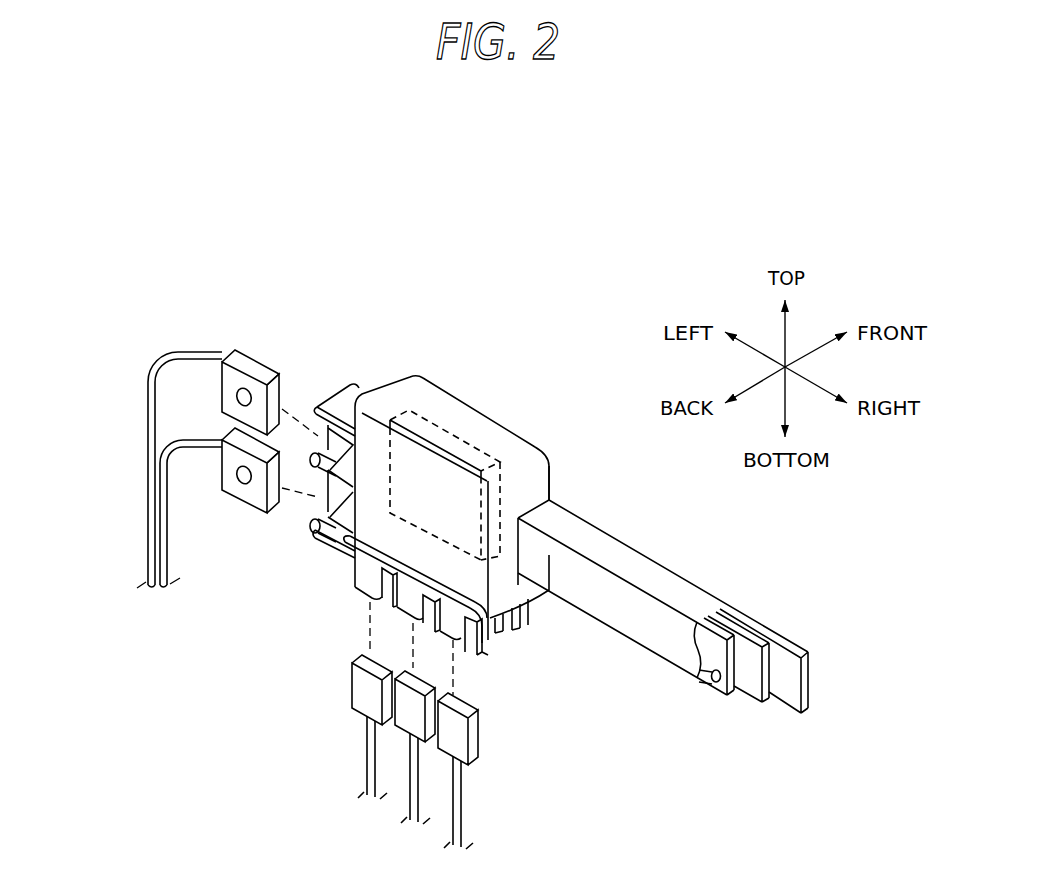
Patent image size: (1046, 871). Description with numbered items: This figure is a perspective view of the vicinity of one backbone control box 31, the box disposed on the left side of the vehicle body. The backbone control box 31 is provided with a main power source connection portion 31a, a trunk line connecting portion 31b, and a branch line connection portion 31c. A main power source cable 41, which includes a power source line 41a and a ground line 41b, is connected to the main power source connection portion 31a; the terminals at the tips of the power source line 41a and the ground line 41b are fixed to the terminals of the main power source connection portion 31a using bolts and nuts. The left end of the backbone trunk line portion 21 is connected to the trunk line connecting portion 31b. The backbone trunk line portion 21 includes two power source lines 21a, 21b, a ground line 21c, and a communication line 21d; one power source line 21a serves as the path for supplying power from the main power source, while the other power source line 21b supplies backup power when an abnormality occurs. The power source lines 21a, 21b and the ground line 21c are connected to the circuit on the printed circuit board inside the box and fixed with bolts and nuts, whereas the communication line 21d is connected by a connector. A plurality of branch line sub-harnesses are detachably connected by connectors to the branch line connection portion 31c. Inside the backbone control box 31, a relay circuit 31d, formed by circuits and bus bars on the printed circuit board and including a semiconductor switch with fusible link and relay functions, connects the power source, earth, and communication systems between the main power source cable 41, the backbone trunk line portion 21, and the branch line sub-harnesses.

The backbone trunk line portion 21 is at (622, 542).
The power source line 21a is at (788, 694).
The power source line 21b is at (752, 684).
The ground line 21c is at (720, 684).
The communication line 21d is at (697, 674).
The backbone control box 31 is at (483, 427).
The main power source connection portion 31a is at (338, 384).
The trunk line connecting portion 31b is at (553, 478).
The branch line connection portion 31c is at (349, 573).
The relay circuit 31d is at (440, 430).
The main power source cable 41 is at (147, 497).
The power source line 41a is at (201, 356).
The ground line 41b is at (203, 457).